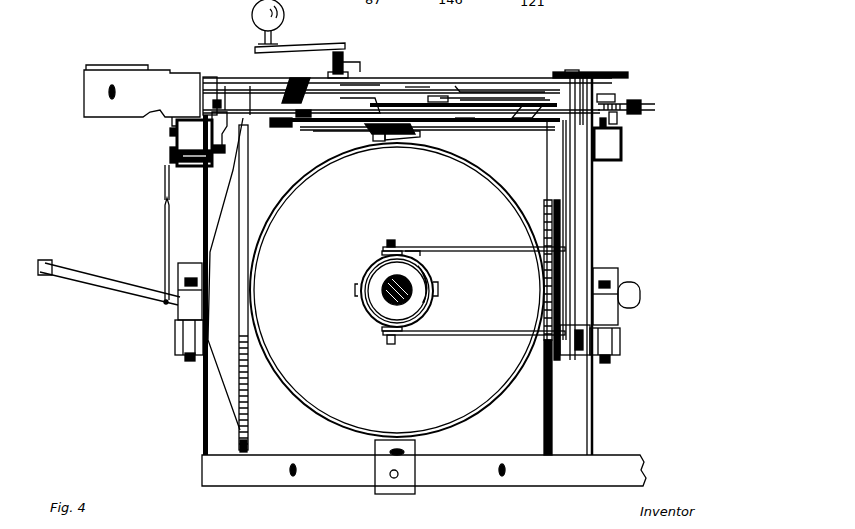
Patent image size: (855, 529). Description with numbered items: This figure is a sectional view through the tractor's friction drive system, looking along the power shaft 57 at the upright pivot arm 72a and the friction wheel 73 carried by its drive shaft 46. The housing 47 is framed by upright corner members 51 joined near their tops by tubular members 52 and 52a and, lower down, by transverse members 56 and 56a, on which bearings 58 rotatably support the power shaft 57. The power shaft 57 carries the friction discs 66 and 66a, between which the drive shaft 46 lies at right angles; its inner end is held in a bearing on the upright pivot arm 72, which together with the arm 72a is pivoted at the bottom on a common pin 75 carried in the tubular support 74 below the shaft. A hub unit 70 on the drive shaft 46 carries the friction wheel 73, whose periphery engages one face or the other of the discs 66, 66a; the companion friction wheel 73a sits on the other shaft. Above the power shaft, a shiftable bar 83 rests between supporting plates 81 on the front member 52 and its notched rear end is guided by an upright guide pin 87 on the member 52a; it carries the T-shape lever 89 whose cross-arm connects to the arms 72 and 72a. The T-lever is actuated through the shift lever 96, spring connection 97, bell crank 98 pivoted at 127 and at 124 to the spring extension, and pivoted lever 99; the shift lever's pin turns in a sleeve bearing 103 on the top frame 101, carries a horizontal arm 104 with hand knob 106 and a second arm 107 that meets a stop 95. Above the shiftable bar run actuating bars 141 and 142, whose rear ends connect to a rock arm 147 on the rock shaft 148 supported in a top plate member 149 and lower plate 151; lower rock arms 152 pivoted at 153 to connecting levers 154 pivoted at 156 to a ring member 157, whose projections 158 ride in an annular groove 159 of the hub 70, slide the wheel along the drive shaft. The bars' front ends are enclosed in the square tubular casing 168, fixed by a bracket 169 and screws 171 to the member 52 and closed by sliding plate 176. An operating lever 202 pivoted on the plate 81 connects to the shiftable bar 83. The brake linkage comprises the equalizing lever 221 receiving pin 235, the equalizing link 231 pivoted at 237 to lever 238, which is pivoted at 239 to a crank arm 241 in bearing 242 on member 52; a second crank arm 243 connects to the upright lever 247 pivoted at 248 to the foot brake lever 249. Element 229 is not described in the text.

The drive shaft 46 is at (384, 286).
The housing 47 is at (593, 201).
The upright corner member 51 is at (220, 440).
The transversely extended tubular member 52 is at (170, 149).
The transversely extended tubular member 52a is at (622, 152).
The transverse member 56 is at (172, 340).
The transverse member 56a is at (620, 340).
The power shaft 57 is at (632, 284).
The bearing 58 is at (188, 271).
The friction disc 66 is at (556, 418).
The friction disc 66a is at (242, 383).
The hub unit 70 is at (382, 272).
The upright pivot arm 72 is at (420, 135).
The upright pivot arm 72a is at (373, 134).
The friction wheel 73 is at (453, 408).
The friction wheel 73a is at (283, 383).
The tubular support 74 is at (312, 476).
The common pin 75 is at (393, 472).
The supporting plate 81 is at (257, 120).
The shiftable bar 83 is at (493, 155).
The upright guide pin 87 is at (618, 124).
The T-shape lever 89 is at (463, 118).
The stop 95 is at (337, 54).
The shift lever 96 is at (311, 45).
The spring connection 97 is at (437, 100).
The bell crank 98 is at (652, 107).
The pivoted lever 99 is at (530, 116).
The top frame 101 is at (628, 77).
The upright sleeve bearing 103 is at (345, 60).
The horizontal arm 104 is at (285, 45).
The hand knob 106 is at (276, 10).
The second arm 107 is at (362, 80).
The pivot 124 is at (622, 113).
The pivot 127 is at (617, 118).
The actuating bar 141 is at (418, 90).
The actuating bar 142 is at (495, 90).
The rock arm 147 is at (607, 98).
The rock shaft 148 is at (573, 74).
The top plate member 149 is at (585, 75).
The lower plate 151 is at (582, 360).
The rock arm 152 is at (476, 247).
The pivot 153 is at (395, 241).
The connecting lever 154 is at (384, 245).
The pivot 156 is at (408, 254).
The ring member 157 is at (435, 306).
The inwardly extended projection 158 is at (432, 290).
The annular groove 159 is at (428, 280).
The square tubular casing 168 is at (95, 91).
The bracket 169 is at (172, 118).
The screw 171 is at (172, 133).
The sliding plate 176 is at (110, 66).
The operating lever 202 is at (296, 80).
The equalizing lever 221 is at (358, 112).
The block 229 is at (308, 113).
The equalizing link 231 is at (234, 108).
The pin 235 is at (288, 122).
The pivot 237 is at (218, 100).
The lever 238 is at (222, 122).
The pivot 239 is at (226, 150).
The crank arm 241 is at (218, 160).
The bearing 242 is at (165, 194).
The second crank arm 243 is at (176, 160).
The upright lever 247 is at (165, 231).
The pivot 248 is at (165, 303).
The foot brake lever 249 is at (115, 296).